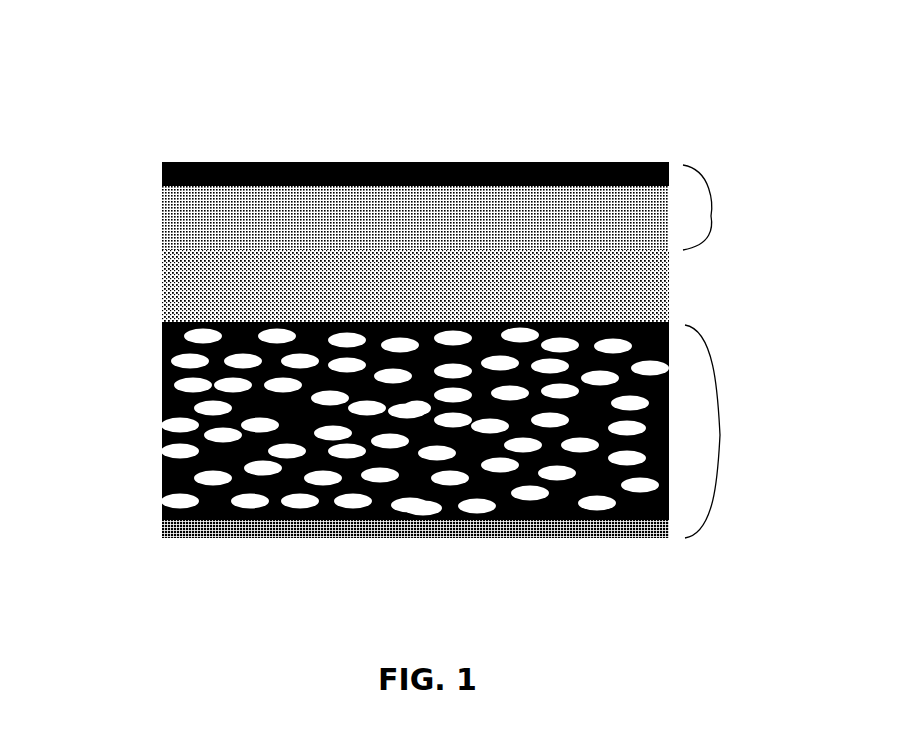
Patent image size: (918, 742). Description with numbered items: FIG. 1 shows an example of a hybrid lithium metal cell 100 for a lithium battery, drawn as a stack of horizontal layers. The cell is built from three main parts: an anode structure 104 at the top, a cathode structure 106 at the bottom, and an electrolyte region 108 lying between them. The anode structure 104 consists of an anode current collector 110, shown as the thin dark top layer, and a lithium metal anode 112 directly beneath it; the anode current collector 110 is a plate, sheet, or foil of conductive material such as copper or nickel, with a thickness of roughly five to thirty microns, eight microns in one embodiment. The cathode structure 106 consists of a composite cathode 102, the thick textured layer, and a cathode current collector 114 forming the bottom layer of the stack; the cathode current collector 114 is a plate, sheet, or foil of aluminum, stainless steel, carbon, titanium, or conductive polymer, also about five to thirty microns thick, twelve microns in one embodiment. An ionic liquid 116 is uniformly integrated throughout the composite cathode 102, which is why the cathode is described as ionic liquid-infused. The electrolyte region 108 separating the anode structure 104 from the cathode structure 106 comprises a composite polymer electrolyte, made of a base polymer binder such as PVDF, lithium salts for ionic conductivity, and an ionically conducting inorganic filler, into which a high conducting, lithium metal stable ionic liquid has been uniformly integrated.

The hybrid lithium metal cell 100 is at (103, 116).
The composite cathode 102 is at (153, 400).
The anode structure 104 is at (713, 217).
The cathode structure 106 is at (721, 435).
The electrolyte region 108 is at (695, 288).
The anode current collector 110 is at (155, 173).
The lithium metal anode 112 is at (152, 222).
The cathode current collector 114 is at (152, 530).
The ionic liquid 116 is at (148, 355).